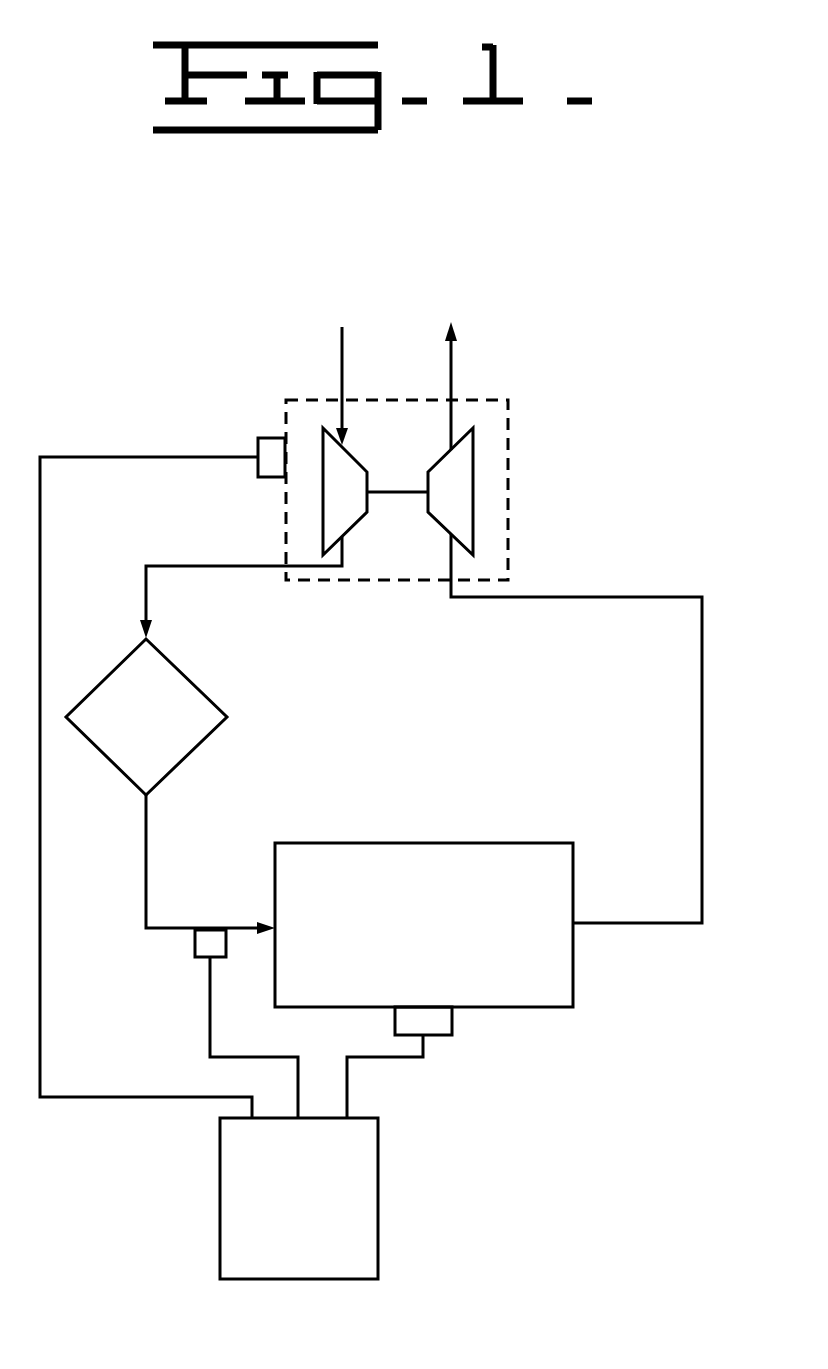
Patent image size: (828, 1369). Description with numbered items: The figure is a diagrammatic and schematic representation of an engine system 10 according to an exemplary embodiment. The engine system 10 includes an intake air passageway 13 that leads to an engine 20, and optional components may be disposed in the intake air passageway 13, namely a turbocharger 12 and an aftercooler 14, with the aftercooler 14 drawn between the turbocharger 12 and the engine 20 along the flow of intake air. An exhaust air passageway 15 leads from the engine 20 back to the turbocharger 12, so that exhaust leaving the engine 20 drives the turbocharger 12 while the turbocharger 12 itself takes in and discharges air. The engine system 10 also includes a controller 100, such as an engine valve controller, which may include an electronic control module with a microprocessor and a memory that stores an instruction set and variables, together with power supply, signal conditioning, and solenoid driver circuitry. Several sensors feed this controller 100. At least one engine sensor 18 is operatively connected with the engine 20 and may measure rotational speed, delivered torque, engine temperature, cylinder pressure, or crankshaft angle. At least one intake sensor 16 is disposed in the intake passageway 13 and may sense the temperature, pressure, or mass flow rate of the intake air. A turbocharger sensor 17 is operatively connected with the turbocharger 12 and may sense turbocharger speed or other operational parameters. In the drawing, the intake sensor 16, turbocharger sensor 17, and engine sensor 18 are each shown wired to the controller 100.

The engine system 10 is at (683, 402).
The turbocharger 12 is at (508, 447).
The intake air passageway 13 is at (217, 567).
The aftercooler 14 is at (210, 695).
The exhaust air passageway 15 is at (660, 597).
The intake sensor 16 is at (193, 949).
The turbocharger sensor 17 is at (258, 447).
The engine sensor 18 is at (453, 1022).
The engine 20 is at (445, 946).
The controller 100 is at (324, 1211).